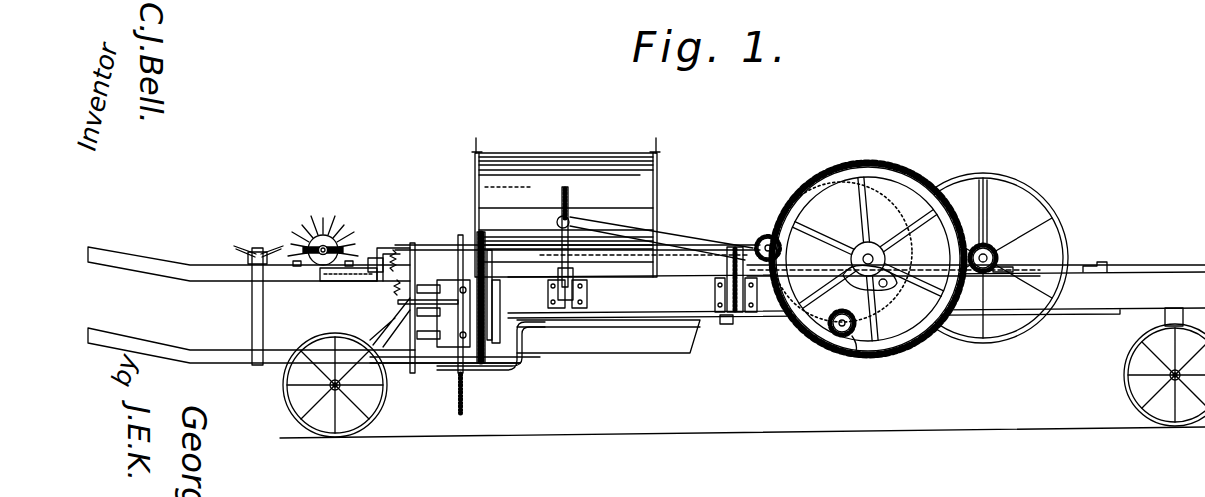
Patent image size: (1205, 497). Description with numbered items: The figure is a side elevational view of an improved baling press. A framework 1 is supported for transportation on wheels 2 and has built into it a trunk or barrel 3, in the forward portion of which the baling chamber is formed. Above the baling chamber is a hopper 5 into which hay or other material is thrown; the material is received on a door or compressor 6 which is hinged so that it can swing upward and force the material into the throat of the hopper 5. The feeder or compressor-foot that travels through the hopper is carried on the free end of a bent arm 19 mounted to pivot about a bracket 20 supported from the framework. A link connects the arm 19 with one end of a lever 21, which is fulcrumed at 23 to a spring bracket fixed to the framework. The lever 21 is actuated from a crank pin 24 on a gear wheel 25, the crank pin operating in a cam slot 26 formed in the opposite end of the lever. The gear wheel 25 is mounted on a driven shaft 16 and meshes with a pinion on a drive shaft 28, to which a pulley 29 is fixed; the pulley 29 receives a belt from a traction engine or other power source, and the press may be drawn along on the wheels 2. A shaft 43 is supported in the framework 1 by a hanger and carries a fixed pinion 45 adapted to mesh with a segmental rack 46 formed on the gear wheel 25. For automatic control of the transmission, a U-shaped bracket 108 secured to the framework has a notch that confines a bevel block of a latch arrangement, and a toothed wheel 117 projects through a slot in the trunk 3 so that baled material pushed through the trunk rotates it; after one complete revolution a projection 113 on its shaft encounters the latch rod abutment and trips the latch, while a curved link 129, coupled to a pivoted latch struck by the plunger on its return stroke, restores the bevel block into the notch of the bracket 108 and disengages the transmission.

The framework 1 is at (1152, 272).
The wheels 2 is at (330, 438).
The trunk or barrel 3 is at (236, 313).
The hopper 5 is at (658, 155).
The door or compressor 6 is at (513, 170).
The driven shaft 16 is at (872, 243).
The bent arm 19 is at (565, 182).
The bracket 20 is at (583, 285).
The lever 21 is at (658, 243).
The fulcrum 23 is at (718, 282).
The crank pin 24 is at (990, 277).
The gear wheel 25 is at (903, 164).
The cam slot 26 is at (845, 263).
The drive shaft 28 is at (991, 247).
The pulley 29 is at (1038, 188).
The shaft 43 is at (838, 336).
The fixed pinion 45 is at (857, 354).
The segmental rack 46 is at (808, 231).
The U-shaped bracket 108 is at (365, 277).
The projection 113 is at (318, 257).
The toothed wheel 117 is at (327, 225).
The curved link 129 is at (598, 328).